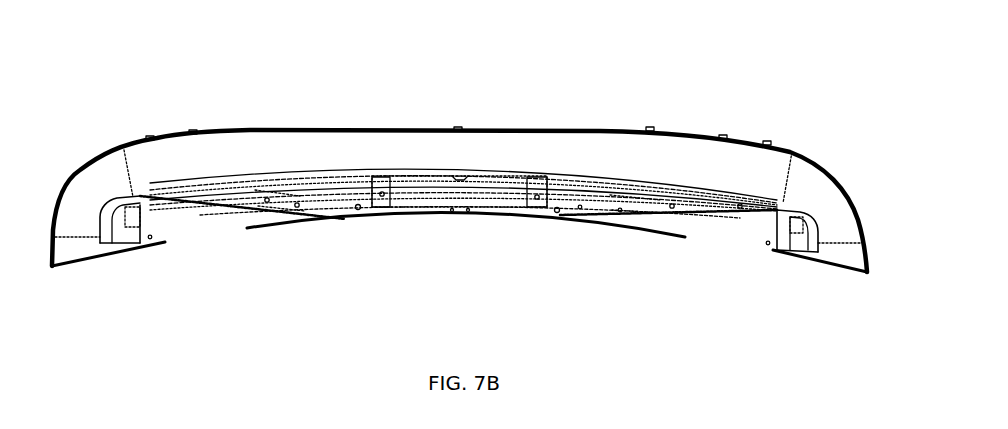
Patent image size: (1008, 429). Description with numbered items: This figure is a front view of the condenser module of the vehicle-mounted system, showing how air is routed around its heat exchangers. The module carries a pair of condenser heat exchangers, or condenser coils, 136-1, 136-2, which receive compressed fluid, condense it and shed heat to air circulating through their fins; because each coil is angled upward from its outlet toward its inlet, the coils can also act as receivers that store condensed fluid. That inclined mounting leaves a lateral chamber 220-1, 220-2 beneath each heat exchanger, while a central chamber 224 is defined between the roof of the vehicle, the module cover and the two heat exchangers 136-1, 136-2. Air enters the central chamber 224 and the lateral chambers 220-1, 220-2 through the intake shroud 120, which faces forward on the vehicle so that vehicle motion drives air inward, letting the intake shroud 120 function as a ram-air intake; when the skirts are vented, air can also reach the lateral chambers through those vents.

The intake shroud 120 is at (307, 143).
The condenser heat exchanger 136-1 is at (282, 197).
The condenser heat exchanger 136-2 is at (593, 199).
The lateral chamber 220-1 is at (165, 223).
The lateral chamber 220-2 is at (758, 232).
The central chamber 224 is at (463, 193).